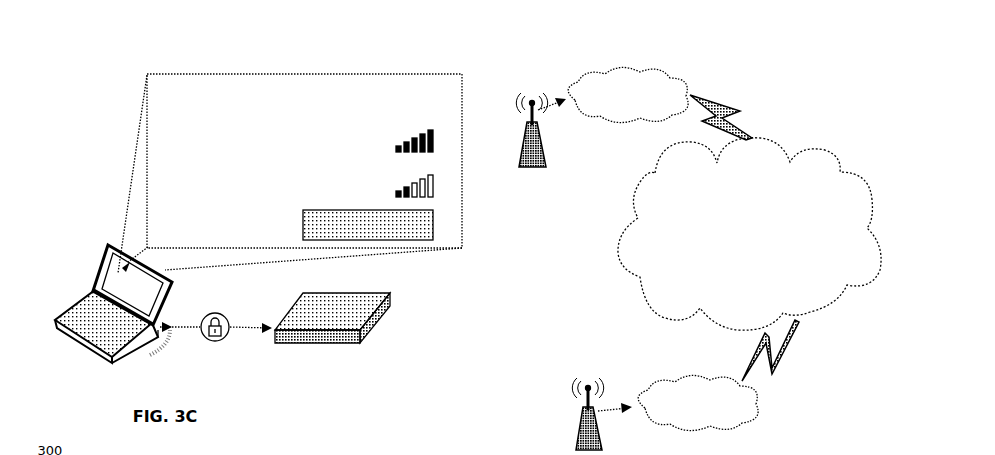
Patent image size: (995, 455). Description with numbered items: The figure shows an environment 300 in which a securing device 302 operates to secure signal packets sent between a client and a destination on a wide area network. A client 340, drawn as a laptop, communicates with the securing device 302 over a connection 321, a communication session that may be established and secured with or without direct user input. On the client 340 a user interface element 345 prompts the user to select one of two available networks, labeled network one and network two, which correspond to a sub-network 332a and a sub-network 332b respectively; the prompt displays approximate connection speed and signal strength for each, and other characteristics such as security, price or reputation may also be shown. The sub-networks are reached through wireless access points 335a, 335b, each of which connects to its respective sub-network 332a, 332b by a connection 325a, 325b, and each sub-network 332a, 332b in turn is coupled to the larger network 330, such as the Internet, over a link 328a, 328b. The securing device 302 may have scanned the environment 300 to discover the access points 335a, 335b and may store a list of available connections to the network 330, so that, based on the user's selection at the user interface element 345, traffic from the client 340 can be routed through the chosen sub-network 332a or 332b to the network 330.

The environment 300 is at (82, 170).
The securing device 302 is at (290, 337).
The connection 321 is at (182, 332).
The connection to sub-network 325a is at (548, 115).
The connection to sub-network 325b is at (608, 413).
The link to network 328a is at (740, 117).
The link to network 328b is at (777, 352).
The network 330 is at (749, 234).
The sub-network 332a is at (676, 73).
The sub-network 332b is at (650, 386).
The access point 335a is at (520, 150).
The access point 335b is at (578, 430).
The client 340 is at (70, 305).
The user interface element 345 is at (392, 72).